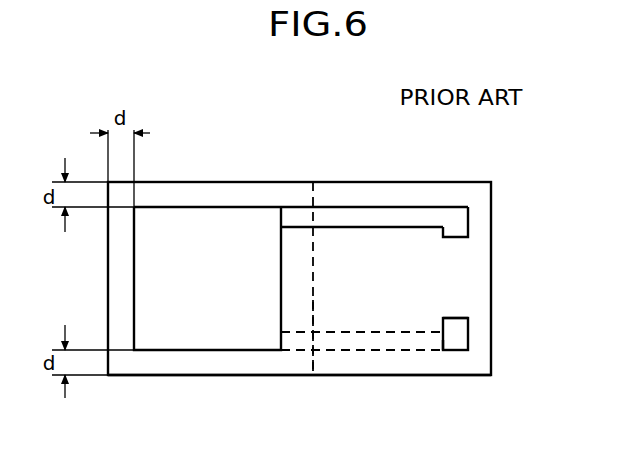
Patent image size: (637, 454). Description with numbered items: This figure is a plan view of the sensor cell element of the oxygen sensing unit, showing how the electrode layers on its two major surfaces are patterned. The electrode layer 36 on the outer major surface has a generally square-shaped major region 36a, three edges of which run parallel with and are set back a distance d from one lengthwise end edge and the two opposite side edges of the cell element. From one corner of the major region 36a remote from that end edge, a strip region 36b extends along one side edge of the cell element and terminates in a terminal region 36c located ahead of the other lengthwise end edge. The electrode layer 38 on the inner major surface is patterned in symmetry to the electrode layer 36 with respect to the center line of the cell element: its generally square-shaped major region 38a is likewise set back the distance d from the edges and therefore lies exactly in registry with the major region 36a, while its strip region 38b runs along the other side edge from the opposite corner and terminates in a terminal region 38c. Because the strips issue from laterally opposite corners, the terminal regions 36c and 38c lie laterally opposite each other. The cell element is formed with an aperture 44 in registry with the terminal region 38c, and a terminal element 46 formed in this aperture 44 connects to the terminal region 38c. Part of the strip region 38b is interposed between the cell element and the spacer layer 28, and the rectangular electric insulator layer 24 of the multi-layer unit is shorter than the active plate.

The first electric insulator layer 24 is at (492, 270).
The spacer layer 28 is at (313, 360).
The electrode layer 36 is at (226, 203).
The major region 36a is at (172, 352).
The strip region 36b is at (383, 207).
The terminal region 36c is at (469, 221).
The electrode layer 38 is at (285, 355).
The major region 38a is at (283, 222).
The strip region 38b is at (400, 352).
The terminal region 38c is at (456, 351).
The aperture 44 is at (462, 324).
The terminal element 46 is at (458, 318).